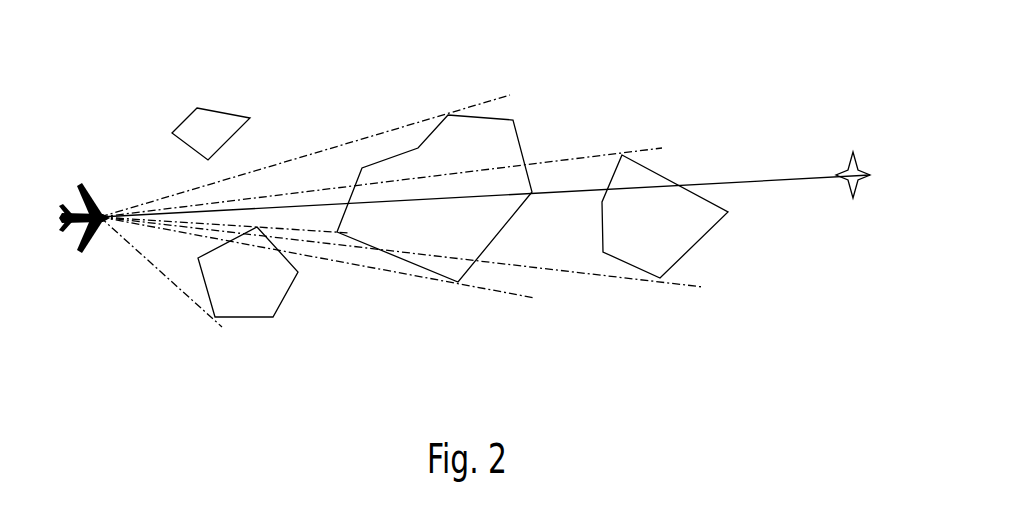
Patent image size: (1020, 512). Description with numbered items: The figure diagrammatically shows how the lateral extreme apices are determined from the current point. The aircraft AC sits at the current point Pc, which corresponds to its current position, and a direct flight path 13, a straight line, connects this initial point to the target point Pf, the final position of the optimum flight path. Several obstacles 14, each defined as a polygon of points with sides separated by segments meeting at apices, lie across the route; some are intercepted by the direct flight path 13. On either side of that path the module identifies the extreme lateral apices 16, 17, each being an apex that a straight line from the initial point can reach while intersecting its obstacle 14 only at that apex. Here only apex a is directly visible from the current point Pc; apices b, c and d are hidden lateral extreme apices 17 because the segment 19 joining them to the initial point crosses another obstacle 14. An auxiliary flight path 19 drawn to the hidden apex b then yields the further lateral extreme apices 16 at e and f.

The direct flight path 13 is at (738, 178).
The obstacle 14 is at (212, 128).
The extreme lateral apex 16 is at (448, 113).
The hidden lateral extreme apex 17 is at (624, 153).
The auxiliary flight path 19 is at (578, 156).
The aircraft AC is at (86, 188).
The current point Pc is at (100, 252).
The target point Pf is at (851, 158).